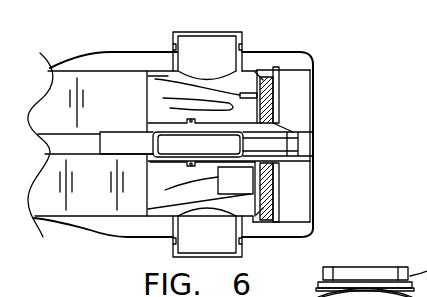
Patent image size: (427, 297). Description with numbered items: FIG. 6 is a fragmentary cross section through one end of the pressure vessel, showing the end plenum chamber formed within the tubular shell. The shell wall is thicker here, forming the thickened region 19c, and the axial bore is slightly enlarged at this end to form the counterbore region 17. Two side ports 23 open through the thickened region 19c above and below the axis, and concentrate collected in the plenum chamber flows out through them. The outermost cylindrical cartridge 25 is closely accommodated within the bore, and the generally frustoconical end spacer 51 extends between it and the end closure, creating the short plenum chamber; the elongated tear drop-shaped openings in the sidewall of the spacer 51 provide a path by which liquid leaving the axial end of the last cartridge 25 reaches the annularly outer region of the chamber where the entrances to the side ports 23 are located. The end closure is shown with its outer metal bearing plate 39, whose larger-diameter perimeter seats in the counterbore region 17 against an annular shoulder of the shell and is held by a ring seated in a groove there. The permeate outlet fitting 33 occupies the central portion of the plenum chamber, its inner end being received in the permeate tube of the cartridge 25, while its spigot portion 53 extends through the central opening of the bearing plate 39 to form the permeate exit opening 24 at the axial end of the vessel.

The counterbore region 17 is at (290, 216).
The thickened region 19c is at (147, 60).
The side port 23 is at (218, 33).
The permeate exit opening 24 is at (288, 145).
The cylindrical cartridge 25 is at (97, 188).
The permeate outlet fitting 33 is at (165, 158).
The bearing plate 39 is at (258, 70).
The end spacer 51 is at (163, 100).
The spigot portion 53 is at (288, 163).